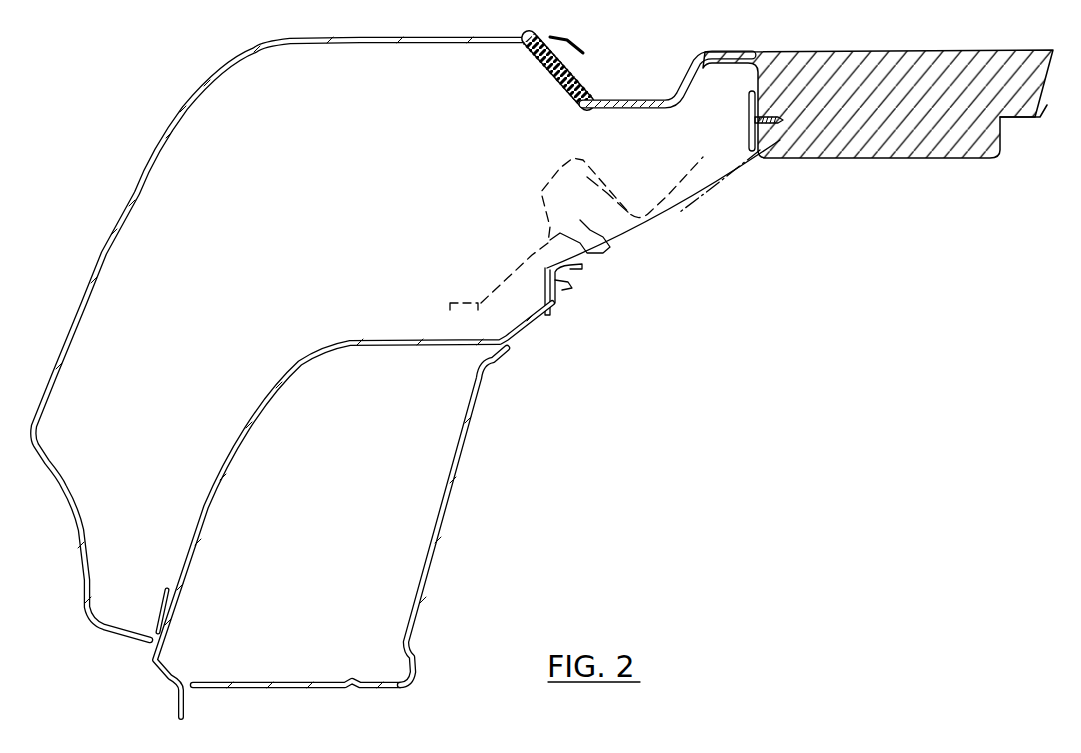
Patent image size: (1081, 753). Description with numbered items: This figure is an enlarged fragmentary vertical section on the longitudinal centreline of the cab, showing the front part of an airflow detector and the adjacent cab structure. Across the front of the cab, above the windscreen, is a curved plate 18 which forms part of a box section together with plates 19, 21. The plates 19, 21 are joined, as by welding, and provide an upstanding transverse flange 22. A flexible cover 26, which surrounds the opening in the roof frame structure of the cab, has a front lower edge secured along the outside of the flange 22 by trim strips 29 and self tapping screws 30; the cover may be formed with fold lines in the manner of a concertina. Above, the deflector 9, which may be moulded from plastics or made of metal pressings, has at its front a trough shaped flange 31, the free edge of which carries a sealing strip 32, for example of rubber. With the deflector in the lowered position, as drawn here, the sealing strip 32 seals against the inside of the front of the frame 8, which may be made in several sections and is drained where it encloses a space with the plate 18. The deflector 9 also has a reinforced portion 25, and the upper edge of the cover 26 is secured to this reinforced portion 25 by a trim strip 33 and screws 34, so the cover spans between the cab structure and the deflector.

The frame 8 is at (160, 160).
The deflector 9 is at (870, 50).
The curved plate 18 is at (214, 508).
The plate 19 is at (320, 690).
The plate 21 is at (445, 512).
The upstanding transverse flange 22 is at (557, 285).
The reinforced portion 25 is at (888, 118).
The flexible cover 26 is at (597, 230).
The trim strips 29 is at (545, 301).
The self tapping screws 30 is at (545, 287).
The trough shaped flange 31 is at (665, 104).
The sealing strip 32 is at (545, 70).
The trim strip 33 is at (748, 103).
The screws 34 is at (755, 120).